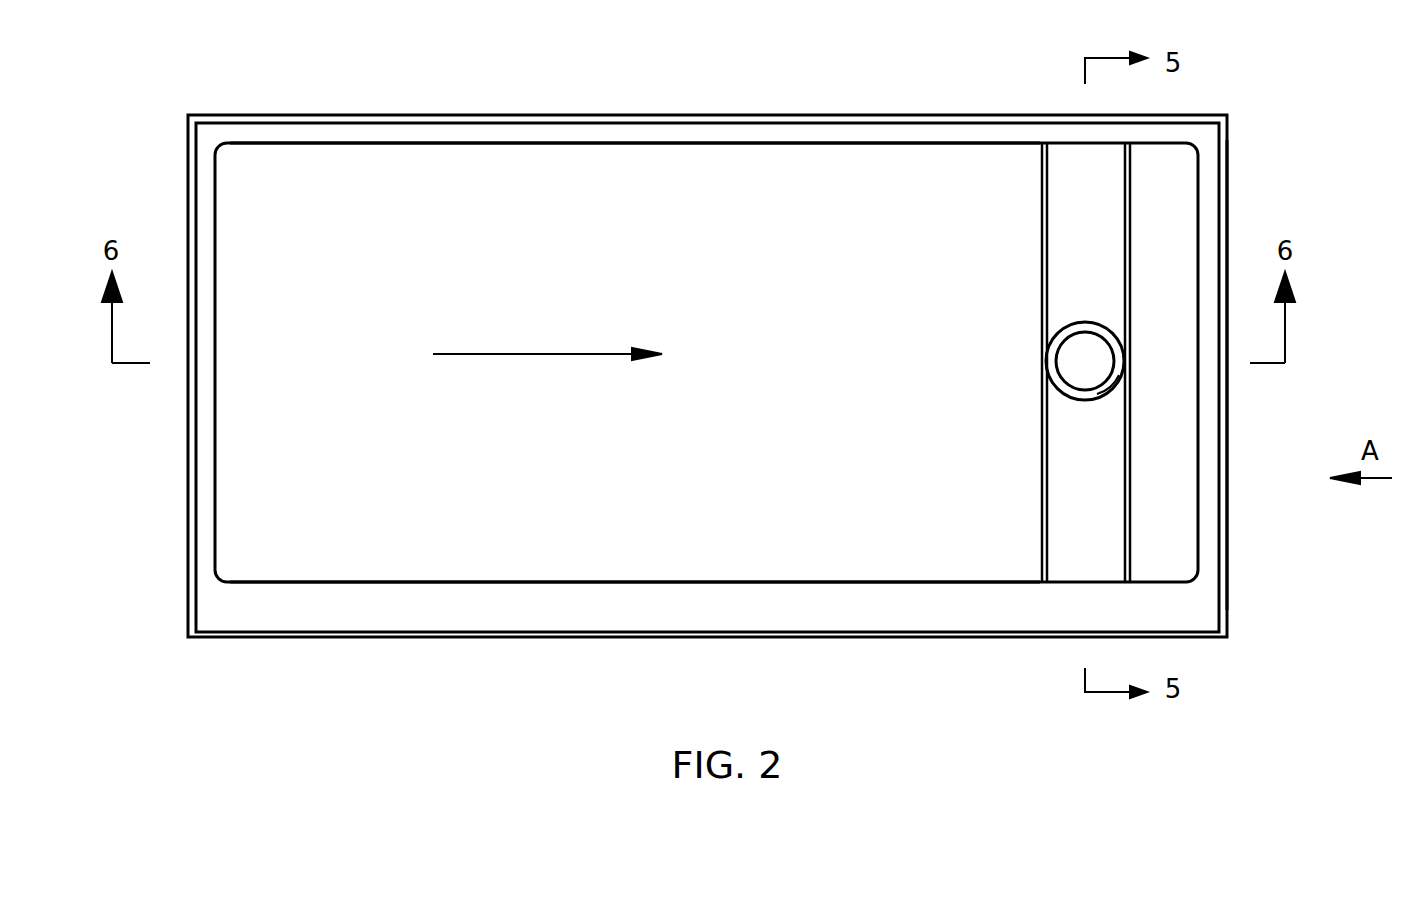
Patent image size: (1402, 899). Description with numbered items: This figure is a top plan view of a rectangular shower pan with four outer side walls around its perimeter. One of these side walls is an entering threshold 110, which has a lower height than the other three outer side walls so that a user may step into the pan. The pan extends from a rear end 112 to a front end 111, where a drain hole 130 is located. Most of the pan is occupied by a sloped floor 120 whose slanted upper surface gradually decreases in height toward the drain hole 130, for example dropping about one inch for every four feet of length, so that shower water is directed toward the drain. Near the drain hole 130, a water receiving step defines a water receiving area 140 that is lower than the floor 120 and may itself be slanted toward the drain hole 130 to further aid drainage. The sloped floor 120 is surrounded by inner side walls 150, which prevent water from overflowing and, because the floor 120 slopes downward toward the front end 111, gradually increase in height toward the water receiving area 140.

The entering threshold 110 is at (527, 637).
The front end 111 is at (1222, 467).
The rear end 112 is at (196, 485).
The sloped floor 120 is at (510, 185).
The drain hole 130 is at (1095, 322).
The water receiving area 140 is at (1080, 533).
The inner side walls 150 is at (336, 147).